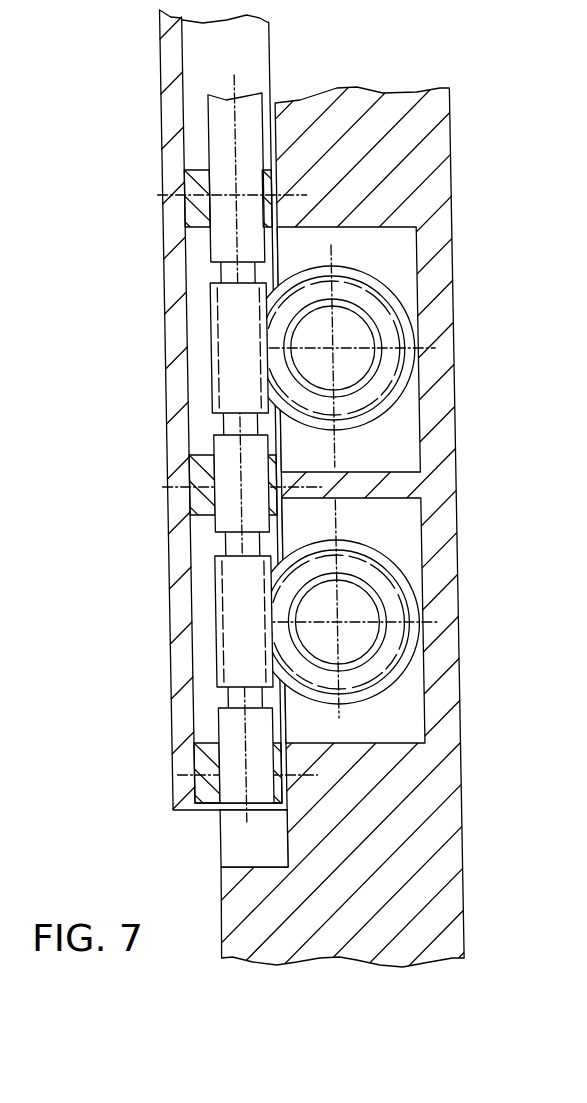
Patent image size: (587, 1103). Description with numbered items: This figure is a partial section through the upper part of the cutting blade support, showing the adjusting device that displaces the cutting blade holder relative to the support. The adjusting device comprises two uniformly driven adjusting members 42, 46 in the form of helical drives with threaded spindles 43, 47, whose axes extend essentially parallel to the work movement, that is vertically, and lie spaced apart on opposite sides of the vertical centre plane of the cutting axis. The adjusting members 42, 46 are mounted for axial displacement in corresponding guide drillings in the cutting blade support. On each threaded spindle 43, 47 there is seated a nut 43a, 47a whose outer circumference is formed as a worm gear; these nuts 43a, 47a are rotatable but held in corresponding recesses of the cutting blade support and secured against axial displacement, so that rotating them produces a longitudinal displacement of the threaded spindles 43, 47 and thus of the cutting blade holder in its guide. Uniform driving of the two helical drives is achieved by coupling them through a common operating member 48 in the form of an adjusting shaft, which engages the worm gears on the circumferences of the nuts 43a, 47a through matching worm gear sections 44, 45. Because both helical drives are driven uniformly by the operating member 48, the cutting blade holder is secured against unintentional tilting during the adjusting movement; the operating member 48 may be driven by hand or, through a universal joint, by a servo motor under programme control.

The adjusting member 42 is at (430, 598).
The threaded spindle 43 is at (353, 605).
The nut 43a is at (273, 652).
The worm gear section 44 is at (235, 582).
The worm gear section 45 is at (228, 360).
The adjusting member 46 is at (407, 302).
The threaded spindle 47 is at (340, 322).
The nut 47a is at (265, 300).
The operating member 48 is at (223, 138).